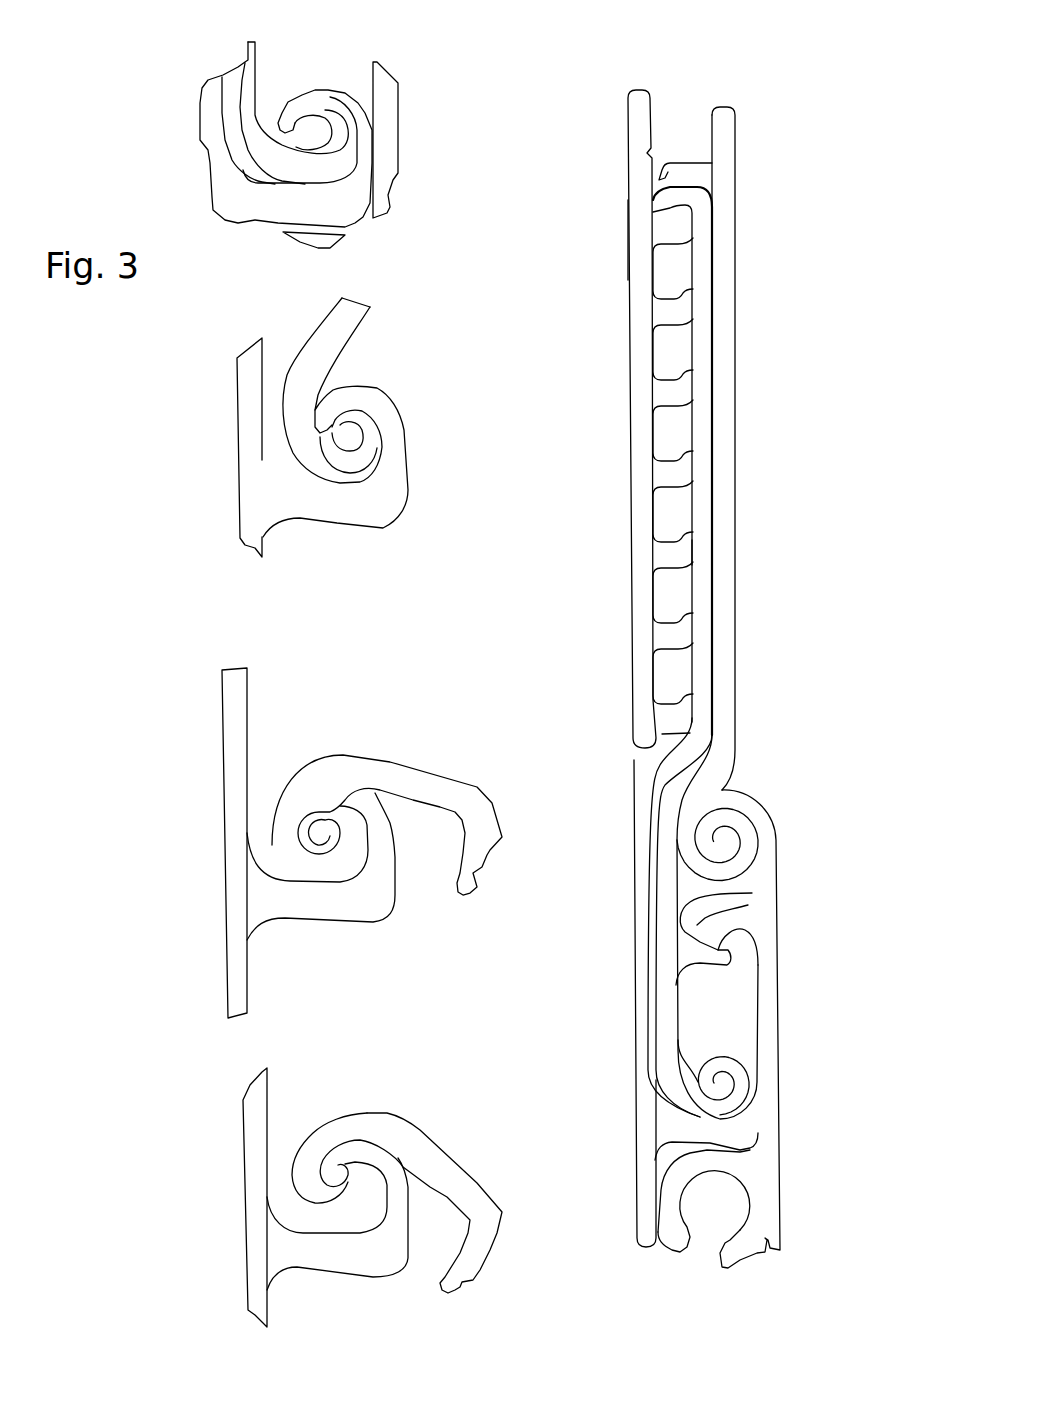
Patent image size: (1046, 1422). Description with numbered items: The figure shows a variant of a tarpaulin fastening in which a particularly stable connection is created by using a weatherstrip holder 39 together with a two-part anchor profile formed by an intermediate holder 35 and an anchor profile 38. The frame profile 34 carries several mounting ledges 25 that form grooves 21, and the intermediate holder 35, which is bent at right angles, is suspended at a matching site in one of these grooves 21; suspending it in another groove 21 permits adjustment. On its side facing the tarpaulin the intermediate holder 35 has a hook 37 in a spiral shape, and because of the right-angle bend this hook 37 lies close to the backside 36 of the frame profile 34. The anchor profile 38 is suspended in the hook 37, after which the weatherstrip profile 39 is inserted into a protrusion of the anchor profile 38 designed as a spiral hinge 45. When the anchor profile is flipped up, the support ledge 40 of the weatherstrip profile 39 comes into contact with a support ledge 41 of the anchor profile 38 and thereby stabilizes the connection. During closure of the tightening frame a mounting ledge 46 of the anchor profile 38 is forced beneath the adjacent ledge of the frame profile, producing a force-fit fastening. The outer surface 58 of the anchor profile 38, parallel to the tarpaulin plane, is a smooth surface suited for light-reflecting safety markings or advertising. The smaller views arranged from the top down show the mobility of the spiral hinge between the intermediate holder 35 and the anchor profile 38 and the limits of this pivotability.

The groove 21 is at (663, 360).
The ledge 25 is at (683, 550).
The frame profile 34 is at (650, 476).
The intermediate holder 35 is at (230, 188).
The backside of frame profile 36 is at (628, 237).
The hook 37 is at (718, 1053).
The anchor profile 38 is at (243, 85).
The weatherstrip holder 39 is at (390, 132).
The support ledge of weatherstrip profile 40 is at (700, 925).
The support ledge of anchor profile 41 is at (690, 952).
The spiral hinge 45 is at (728, 837).
The mounting ledge 46 is at (662, 178).
The outer surface 58 is at (736, 409).